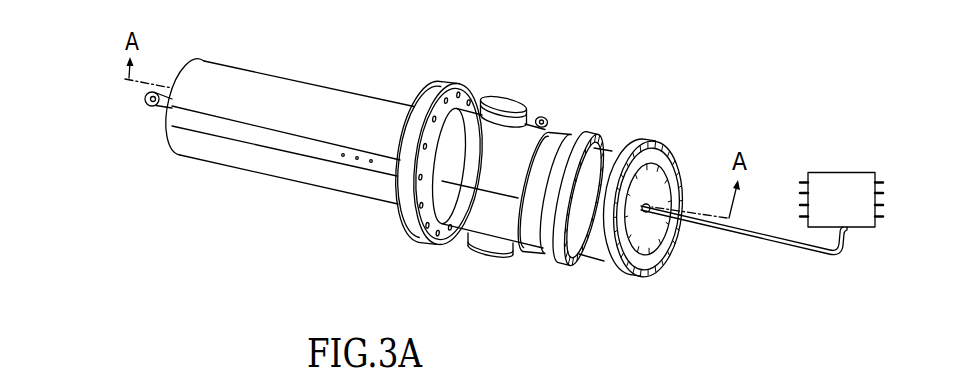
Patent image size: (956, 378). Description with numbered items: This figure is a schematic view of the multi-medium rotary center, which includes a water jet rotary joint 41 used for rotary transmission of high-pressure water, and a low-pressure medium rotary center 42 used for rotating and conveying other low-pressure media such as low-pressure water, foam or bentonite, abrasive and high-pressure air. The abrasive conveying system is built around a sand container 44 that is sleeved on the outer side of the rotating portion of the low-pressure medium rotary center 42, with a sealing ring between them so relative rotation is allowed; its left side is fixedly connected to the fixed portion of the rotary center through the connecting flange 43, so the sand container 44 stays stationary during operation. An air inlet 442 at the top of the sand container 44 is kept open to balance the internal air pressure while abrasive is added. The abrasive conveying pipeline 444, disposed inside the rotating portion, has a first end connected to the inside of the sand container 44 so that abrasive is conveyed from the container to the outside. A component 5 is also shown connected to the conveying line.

The water jet rotary joint 41 is at (146, 109).
The low-pressure medium rotary center 42 is at (300, 115).
The connecting flange 43 is at (459, 83).
The sand container 44 is at (453, 203).
The air inlet 442 is at (556, 118).
The abrasive conveying pipeline 444 is at (670, 230).
The controller 5 is at (836, 172).